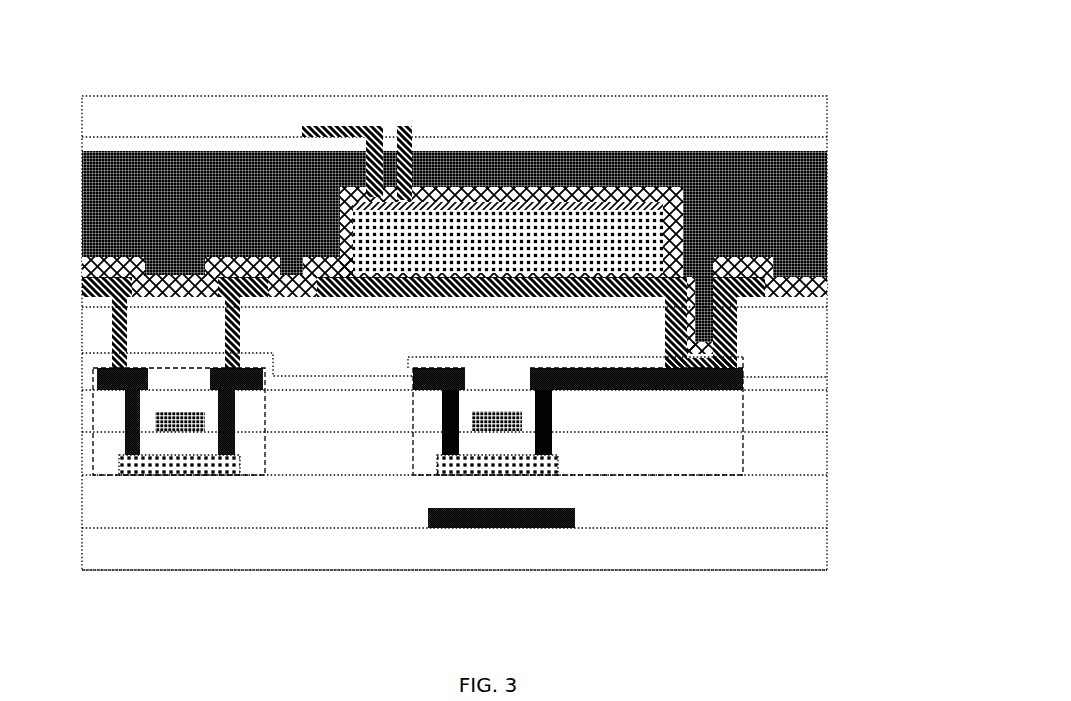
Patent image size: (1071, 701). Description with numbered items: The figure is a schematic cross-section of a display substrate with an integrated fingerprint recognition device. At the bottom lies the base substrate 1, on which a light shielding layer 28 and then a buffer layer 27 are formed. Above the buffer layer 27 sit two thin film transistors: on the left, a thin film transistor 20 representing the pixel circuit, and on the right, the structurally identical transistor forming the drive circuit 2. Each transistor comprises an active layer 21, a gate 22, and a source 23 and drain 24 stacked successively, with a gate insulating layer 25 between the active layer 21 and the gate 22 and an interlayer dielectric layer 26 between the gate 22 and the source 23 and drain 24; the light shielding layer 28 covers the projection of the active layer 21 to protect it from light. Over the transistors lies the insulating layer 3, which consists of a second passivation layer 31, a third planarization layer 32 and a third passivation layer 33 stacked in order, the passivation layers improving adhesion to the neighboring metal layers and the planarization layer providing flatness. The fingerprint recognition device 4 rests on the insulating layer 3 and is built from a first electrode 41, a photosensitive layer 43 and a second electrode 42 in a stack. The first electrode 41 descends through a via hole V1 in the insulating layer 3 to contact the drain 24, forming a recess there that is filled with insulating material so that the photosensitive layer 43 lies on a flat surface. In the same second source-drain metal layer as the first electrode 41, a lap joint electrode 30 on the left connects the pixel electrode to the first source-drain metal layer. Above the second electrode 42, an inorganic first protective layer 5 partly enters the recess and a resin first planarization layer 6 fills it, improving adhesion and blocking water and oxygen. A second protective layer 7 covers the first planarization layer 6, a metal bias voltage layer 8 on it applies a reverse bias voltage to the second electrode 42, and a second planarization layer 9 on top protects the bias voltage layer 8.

The base substrate 1 is at (777, 548).
The drive circuit 2 is at (561, 468).
The insulating layer 3 is at (515, 373).
The fingerprint recognition device 4 is at (508, 136).
The first protective layer 5 is at (777, 283).
The first planarization layer 6 is at (777, 208).
The second protective layer 7 is at (777, 144).
The bias voltage layer 8 is at (346, 126).
The second planarization layer 9 is at (777, 119).
The thin film transistor 20 is at (93, 445).
The active layer 21 is at (535, 464).
The gate 22 is at (494, 411).
The source 23 is at (437, 368).
The drain 24 is at (563, 368).
The gate insulating layer 25 is at (778, 453).
The interlayer dielectric layer 26 is at (775, 415).
The buffer layer 27 is at (778, 502).
The light shielding layer 28 is at (500, 530).
The lap joint electrode 30 is at (82, 285).
The second passivation layer 31 is at (778, 385).
The third planarization layer 32 is at (778, 338).
The third passivation layer 33 is at (780, 303).
The first electrode 41 is at (458, 266).
The second electrode 42 is at (495, 255).
The photosensitive layer 43 is at (537, 240).
The via hole V1 is at (666, 322).